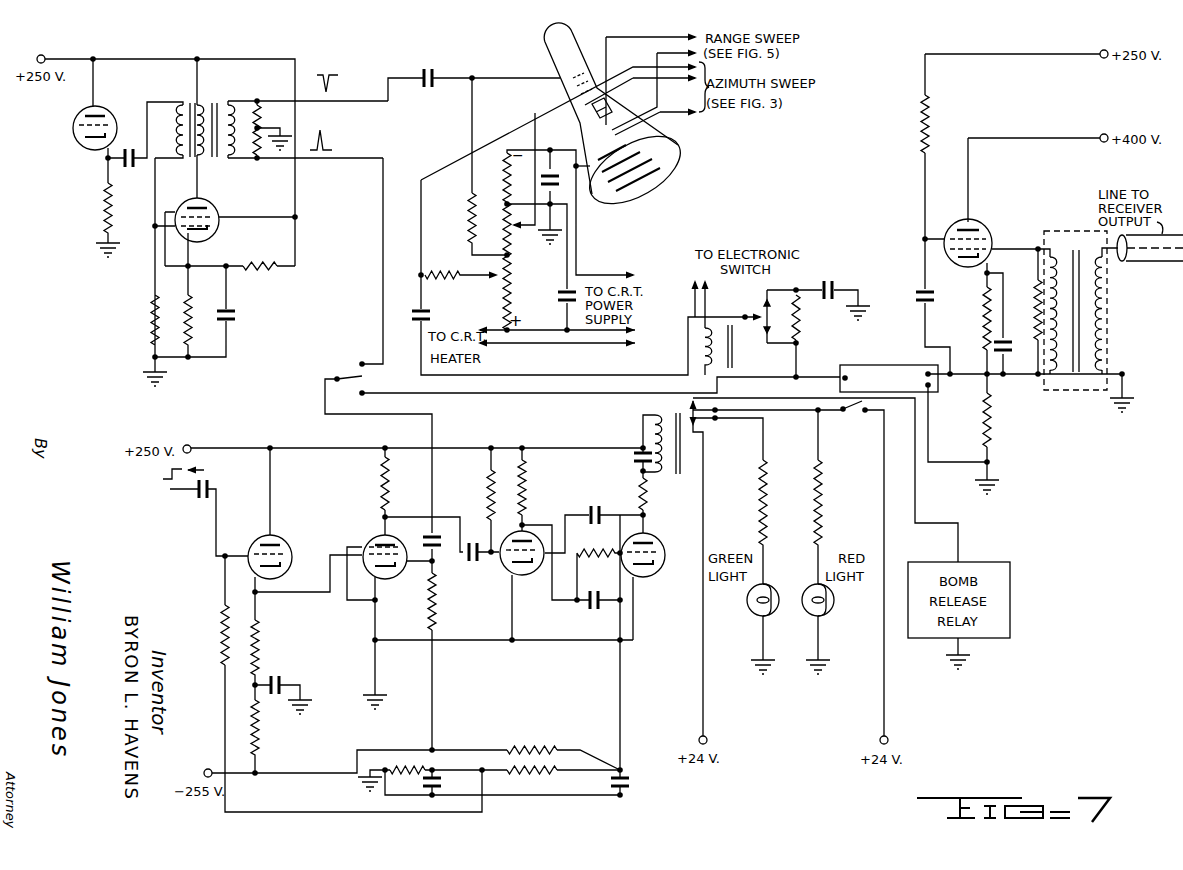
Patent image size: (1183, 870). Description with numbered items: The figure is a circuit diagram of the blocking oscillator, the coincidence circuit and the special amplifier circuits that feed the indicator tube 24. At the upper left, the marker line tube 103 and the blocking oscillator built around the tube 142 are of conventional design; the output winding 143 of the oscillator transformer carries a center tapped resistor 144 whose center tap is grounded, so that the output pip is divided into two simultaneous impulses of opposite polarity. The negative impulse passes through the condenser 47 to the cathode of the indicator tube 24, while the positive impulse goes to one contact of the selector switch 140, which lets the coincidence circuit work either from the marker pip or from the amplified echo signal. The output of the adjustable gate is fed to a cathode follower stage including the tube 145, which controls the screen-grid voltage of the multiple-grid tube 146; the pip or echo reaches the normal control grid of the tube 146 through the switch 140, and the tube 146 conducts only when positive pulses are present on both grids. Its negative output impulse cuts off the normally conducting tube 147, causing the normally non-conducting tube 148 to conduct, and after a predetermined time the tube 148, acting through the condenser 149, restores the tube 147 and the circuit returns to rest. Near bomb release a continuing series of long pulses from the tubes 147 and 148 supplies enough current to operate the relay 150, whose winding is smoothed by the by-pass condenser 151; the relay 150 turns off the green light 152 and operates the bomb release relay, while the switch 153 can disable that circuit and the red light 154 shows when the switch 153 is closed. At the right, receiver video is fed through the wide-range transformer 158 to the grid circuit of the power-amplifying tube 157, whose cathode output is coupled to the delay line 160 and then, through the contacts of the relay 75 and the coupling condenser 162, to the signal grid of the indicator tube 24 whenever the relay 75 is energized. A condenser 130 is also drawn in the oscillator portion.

The marker line tube 103 is at (113, 105).
The coupling capacitor 130 is at (138, 168).
The blocking oscillator tube 142 is at (222, 208).
The output winding 143 is at (228, 104).
The center tapped resistor 144 is at (262, 130).
The condenser 47 is at (437, 69).
The indicator tube 24 is at (672, 178).
The coupling condenser 162 is at (406, 316).
The selector switch 140 is at (336, 376).
The relay 75 is at (720, 366).
The delay line 160 is at (890, 360).
The video amplifier tube 157 is at (987, 225).
The wide-range transformer 158 is at (1071, 378).
The relay 150 is at (652, 420).
The by-pass condenser 151 is at (633, 456).
The condenser 149 is at (610, 508).
The gate circuit tube 147 is at (540, 528).
The multiple-grid vacuum tube 146 is at (372, 541).
The cathode follower tube 145 is at (290, 543).
The gate circuit tube 148 is at (668, 545).
The green light 152 is at (757, 616).
The switch 153 is at (852, 416).
The red light 154 is at (822, 616).